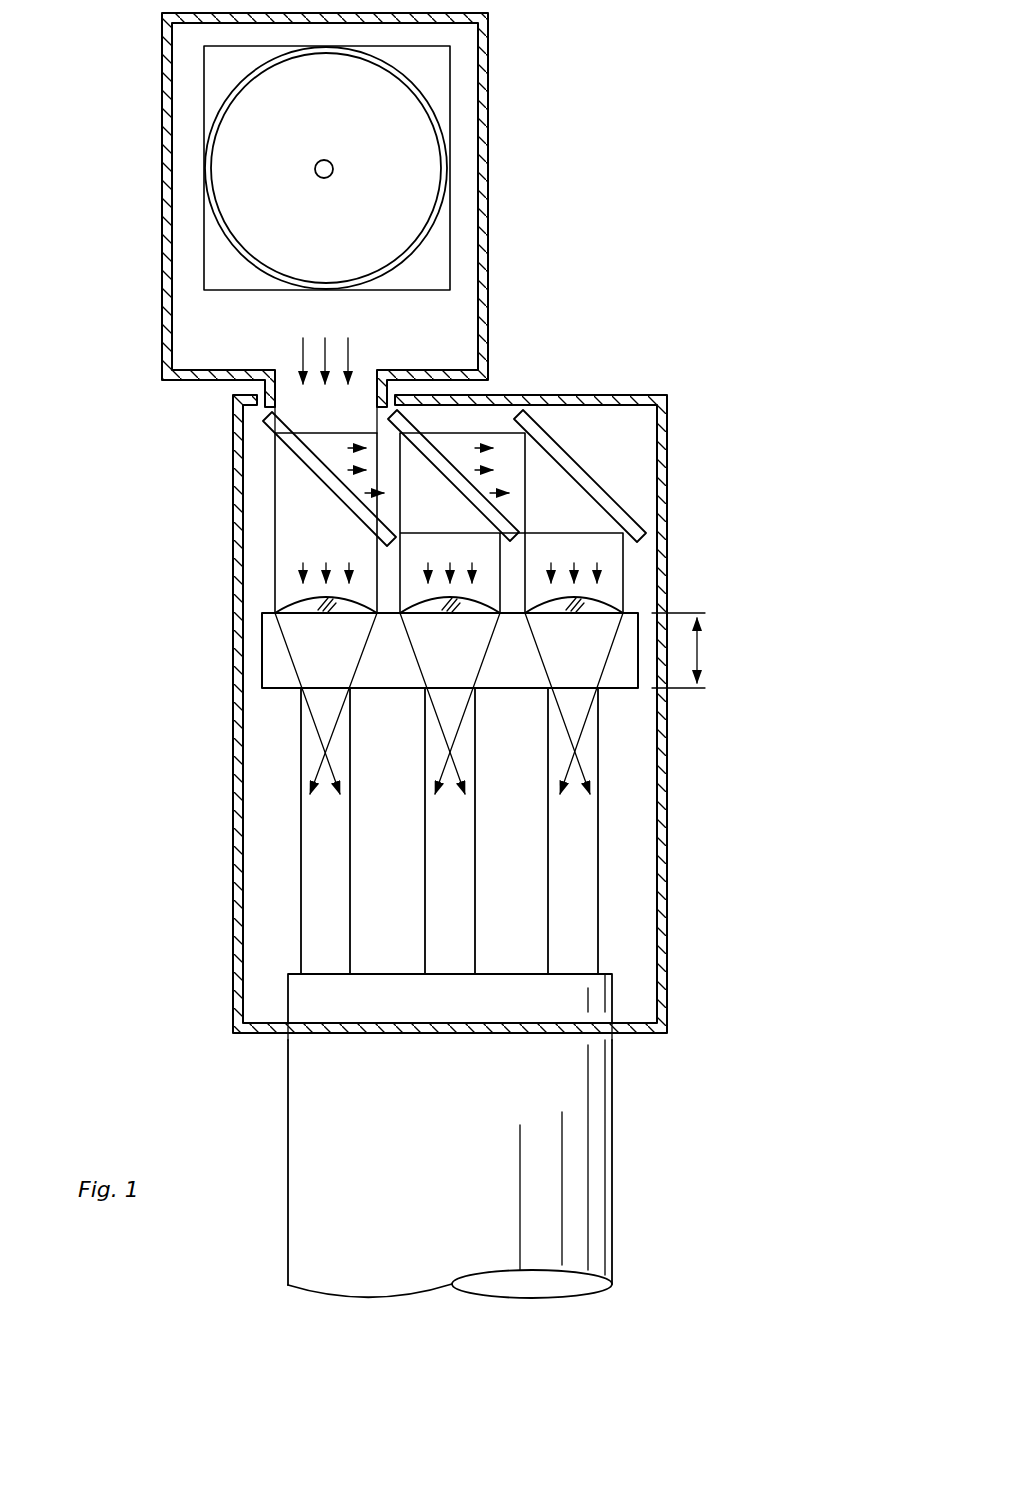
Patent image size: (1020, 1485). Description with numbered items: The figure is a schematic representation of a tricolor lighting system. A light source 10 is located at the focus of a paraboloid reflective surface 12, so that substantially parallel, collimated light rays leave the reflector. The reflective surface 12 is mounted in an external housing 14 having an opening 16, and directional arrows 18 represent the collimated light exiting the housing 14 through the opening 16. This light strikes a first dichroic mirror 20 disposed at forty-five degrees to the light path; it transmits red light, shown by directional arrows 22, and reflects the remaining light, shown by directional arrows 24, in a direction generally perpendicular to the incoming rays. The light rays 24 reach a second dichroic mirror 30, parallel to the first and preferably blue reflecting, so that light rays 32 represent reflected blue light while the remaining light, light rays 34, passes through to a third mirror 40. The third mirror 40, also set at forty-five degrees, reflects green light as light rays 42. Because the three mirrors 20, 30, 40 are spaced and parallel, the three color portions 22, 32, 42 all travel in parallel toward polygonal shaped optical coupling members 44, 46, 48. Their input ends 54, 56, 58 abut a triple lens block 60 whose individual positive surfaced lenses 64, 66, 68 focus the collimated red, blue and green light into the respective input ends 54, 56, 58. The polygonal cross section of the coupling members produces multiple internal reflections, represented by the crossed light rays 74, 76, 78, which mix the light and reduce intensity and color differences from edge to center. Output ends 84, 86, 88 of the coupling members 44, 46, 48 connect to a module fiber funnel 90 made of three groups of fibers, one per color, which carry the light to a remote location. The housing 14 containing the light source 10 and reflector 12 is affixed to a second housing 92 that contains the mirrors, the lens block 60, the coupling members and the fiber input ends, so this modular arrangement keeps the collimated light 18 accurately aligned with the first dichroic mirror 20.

The light source 10 is at (333, 166).
The reflective surface 12 is at (247, 85).
The external housing 14 is at (490, 145).
The opening 16 is at (363, 385).
The directional arrows 18 is at (312, 360).
The first dichroic mirror 20 is at (336, 480).
The directional arrows 22 is at (330, 578).
The directional arrows 24 is at (360, 470).
The second dichroic mirror 30 is at (461, 480).
The light rays 32 is at (450, 586).
The light rays 34 is at (488, 470).
The third mirror 40 is at (581, 480).
The light rays 42 is at (575, 586).
The optical coupling member 44 is at (300, 876).
The optical coupling member 46 is at (425, 876).
The optical coupling member 48 is at (548, 876).
The input end 54 is at (315, 722).
The input end 56 is at (439, 722).
The input end 58 is at (563, 722).
The triple lens block 60 is at (700, 652).
The positive surfaced lens 64 is at (342, 610).
The positive surfaced lens 66 is at (467, 610).
The positive surfaced lens 68 is at (592, 610).
The crossed light rays 74 is at (337, 771).
The second focused beam 76 is at (462, 771).
The third focused beam 78 is at (587, 771).
The output end 84 is at (325, 975).
The output end 86 is at (452, 975).
The output end 88 is at (570, 975).
The module fiber funnel 90 is at (612, 1148).
The second housing 92 is at (608, 393).